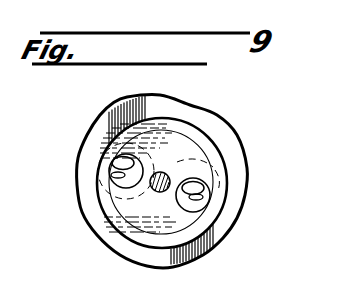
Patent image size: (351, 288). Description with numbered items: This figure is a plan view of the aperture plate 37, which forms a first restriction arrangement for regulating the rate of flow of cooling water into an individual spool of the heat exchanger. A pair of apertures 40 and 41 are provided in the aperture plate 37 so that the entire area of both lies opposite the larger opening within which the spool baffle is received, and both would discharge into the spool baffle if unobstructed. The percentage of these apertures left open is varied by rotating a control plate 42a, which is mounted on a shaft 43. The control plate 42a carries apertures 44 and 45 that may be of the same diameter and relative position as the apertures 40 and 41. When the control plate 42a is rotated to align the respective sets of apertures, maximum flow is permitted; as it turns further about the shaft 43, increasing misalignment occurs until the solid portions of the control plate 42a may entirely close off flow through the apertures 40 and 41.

The aperture plate 37 is at (221, 232).
The aperture 40 is at (204, 198).
The aperture 41 is at (120, 172).
The control plate 42a is at (195, 142).
The shaft 43 is at (168, 174).
The aperture 44 is at (186, 189).
The aperture 45 is at (114, 162).